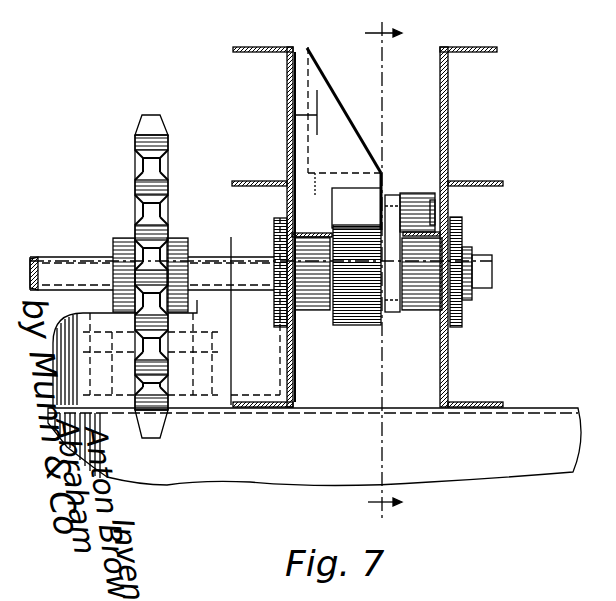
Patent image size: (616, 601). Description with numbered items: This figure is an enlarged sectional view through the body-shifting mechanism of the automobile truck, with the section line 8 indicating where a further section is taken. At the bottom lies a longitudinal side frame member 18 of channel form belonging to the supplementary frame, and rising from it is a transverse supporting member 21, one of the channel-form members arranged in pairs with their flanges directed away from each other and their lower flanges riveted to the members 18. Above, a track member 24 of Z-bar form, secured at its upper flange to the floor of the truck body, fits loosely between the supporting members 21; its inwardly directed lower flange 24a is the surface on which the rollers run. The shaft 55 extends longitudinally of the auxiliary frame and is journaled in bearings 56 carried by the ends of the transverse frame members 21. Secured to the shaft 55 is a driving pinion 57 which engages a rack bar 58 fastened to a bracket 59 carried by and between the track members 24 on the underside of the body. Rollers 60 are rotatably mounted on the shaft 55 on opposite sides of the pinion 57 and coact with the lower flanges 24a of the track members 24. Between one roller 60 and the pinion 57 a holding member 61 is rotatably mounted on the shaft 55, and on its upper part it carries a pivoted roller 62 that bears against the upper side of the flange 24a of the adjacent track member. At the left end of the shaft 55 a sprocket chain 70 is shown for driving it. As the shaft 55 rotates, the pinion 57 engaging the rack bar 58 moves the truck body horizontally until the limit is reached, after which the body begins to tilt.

The section line 8- 8 is at (383, 272).
The longitudinal side frame member 18 is at (314, 447).
The transverse supporting member 21 is at (281, 378).
The track member 24 is at (287, 144).
The lower flange 24a is at (512, 294).
The shaft 55 is at (70, 259).
The bearing 56 is at (277, 306).
The driving pinion 57 is at (362, 312).
The rack bar 58 is at (363, 195).
The bracket 59 is at (296, 115).
The roller 60 is at (312, 312).
The holding member 61 is at (395, 313).
The pivoted roller 62 is at (418, 193).
The sprocket chain 70 is at (148, 114).